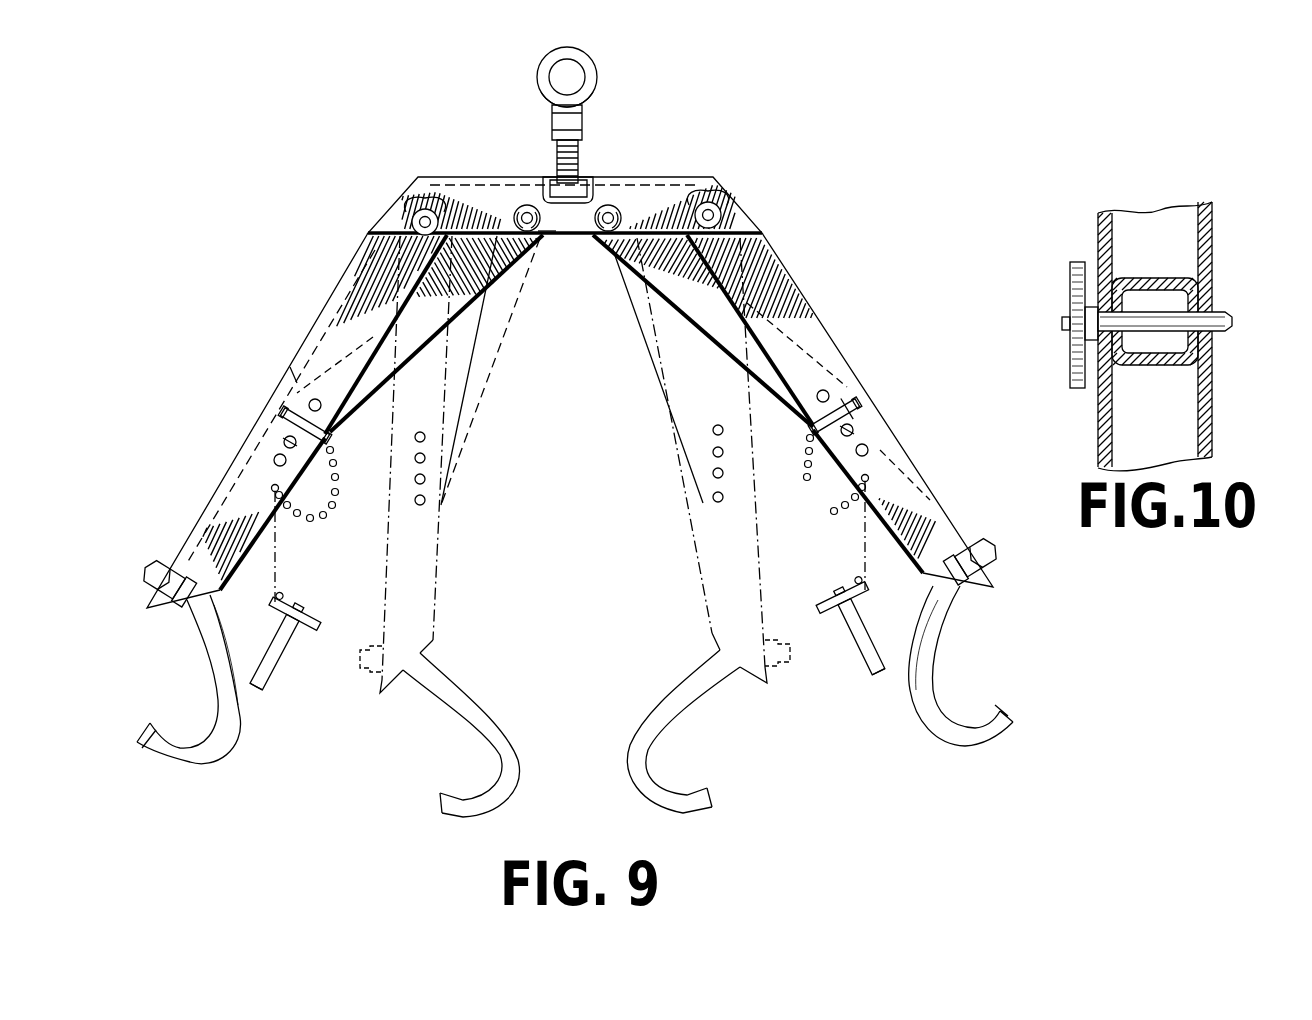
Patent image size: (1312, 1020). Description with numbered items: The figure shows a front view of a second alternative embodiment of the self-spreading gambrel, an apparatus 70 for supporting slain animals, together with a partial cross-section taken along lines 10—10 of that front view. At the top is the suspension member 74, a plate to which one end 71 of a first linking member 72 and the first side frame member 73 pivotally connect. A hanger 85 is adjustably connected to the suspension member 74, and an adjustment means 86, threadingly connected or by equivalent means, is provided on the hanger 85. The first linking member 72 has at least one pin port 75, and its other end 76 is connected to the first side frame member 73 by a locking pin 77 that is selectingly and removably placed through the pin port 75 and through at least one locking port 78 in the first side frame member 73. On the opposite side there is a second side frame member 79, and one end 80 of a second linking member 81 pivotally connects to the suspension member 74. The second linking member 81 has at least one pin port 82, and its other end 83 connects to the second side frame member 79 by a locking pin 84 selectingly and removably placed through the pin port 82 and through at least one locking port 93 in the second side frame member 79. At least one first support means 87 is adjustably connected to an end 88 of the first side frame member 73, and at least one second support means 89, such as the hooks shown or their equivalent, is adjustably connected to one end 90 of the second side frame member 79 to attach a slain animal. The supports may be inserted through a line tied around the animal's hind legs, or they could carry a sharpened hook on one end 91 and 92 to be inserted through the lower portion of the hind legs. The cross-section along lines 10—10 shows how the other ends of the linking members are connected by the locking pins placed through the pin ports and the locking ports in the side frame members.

In FIG. 9, the apparatus for supporting slain animals 70 is at (692, 152).
In FIG. 9, the one end of first linking member 71 is at (547, 236).
In FIG. 9, the first linking member 72 is at (424, 344).
In FIG. 9, the first side frame member 73 is at (343, 289).
In FIG. 9, the suspension member 74 is at (458, 177).
In FIG. 9, the pin port 75 is at (290, 364).
In FIG. 9, the other end of first linking member 76 is at (527, 203).
In FIG. 9, the locking pin 77 is at (283, 412).
In FIG. 9, the locking port 78 is at (272, 455).
In FIG. 9, the second side frame member 79 is at (796, 285).
In FIG. 10, the second side frame member 79 is at (1216, 400).
In FIG. 9, the one end of second linking member 80 is at (613, 193).
In FIG. 9, the second linking member 81 is at (716, 345).
In FIG. 10, the second linking member 81 is at (1146, 276).
In FIG. 9, the pin port 82 is at (818, 395).
In FIG. 9, the other end of second linking member 83 is at (855, 425).
In FIG. 9, the locking pin 84 is at (857, 392).
In FIG. 10, the locking pin 84 is at (1233, 320).
In FIG. 9, the hanger 85 is at (580, 150).
In FIG. 9, the adjustment means 86 is at (549, 122).
In FIG. 9, the first support means 87 is at (315, 538).
In FIG. 9, the end of first side frame member 88 is at (147, 606).
In FIG. 9, the second support means 89 is at (652, 712).
In FIG. 9, the end of second side frame member 90 is at (995, 584).
In FIG. 9, the end of first support means 91 is at (147, 733).
In FIG. 9, the end of second support means 92 is at (1004, 708).
In FIG. 9, the locking port 93 is at (869, 446).
In FIG. 9, the section lines 10— 10 is at (797, 400).